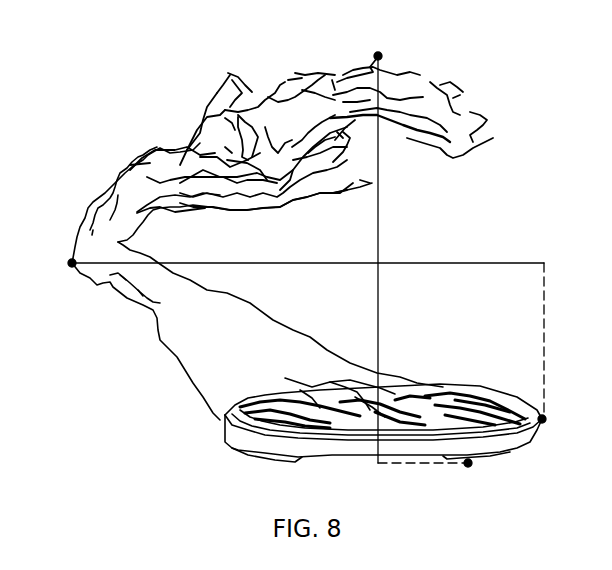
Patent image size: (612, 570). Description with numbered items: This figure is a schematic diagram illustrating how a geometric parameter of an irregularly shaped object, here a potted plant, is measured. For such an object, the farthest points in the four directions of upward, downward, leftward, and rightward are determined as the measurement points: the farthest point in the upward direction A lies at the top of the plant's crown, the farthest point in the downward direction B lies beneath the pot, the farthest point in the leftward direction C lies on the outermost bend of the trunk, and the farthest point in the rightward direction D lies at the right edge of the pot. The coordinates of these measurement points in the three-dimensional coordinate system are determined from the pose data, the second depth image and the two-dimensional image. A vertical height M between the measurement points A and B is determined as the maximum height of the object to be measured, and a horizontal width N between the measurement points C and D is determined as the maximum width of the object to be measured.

The farthest point in the upward direction A is at (385, 40).
The farthest point in the downward direction B is at (483, 473).
The farthest point in the leftward direction C is at (63, 252).
The farthest point in the rightward direction D is at (552, 419).
The vertical height M is at (387, 259).
The horizontal width N is at (308, 350).